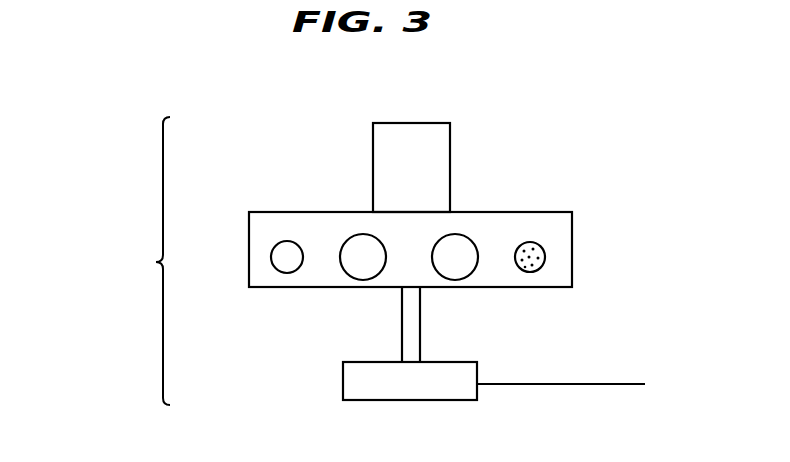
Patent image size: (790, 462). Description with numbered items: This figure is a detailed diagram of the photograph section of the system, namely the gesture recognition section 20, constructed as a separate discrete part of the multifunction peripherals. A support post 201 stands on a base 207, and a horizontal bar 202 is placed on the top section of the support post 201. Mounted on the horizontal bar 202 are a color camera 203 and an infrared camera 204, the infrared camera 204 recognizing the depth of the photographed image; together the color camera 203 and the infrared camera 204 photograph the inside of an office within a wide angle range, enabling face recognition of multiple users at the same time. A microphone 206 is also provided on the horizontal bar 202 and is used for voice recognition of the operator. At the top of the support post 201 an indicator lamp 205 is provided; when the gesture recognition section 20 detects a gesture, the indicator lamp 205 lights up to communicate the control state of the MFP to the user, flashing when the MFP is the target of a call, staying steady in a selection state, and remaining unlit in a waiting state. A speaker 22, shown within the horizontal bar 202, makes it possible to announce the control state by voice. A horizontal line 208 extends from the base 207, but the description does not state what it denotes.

The gesture recognition section 20 is at (140, 261).
The speaker 22 is at (545, 248).
The support post 201 is at (410, 348).
The horizontal bar 202 is at (262, 285).
The color camera 203 is at (364, 240).
The infrared camera 204 is at (460, 245).
The indicator lamp 205 is at (450, 152).
The microphone 206 is at (283, 252).
The base 207 is at (430, 392).
The arm 208 is at (605, 385).